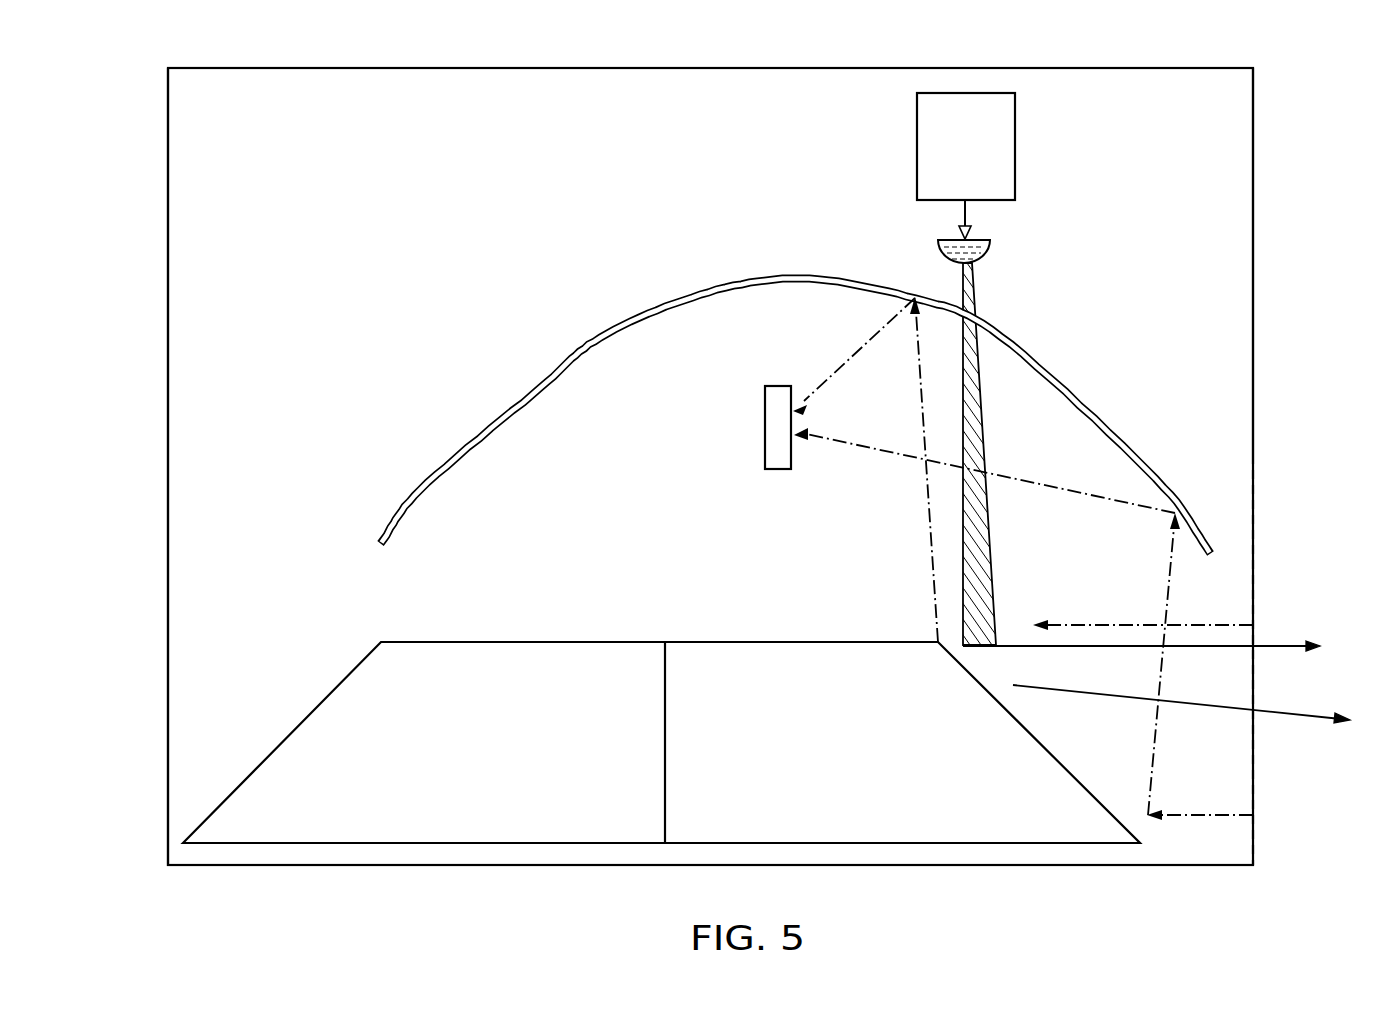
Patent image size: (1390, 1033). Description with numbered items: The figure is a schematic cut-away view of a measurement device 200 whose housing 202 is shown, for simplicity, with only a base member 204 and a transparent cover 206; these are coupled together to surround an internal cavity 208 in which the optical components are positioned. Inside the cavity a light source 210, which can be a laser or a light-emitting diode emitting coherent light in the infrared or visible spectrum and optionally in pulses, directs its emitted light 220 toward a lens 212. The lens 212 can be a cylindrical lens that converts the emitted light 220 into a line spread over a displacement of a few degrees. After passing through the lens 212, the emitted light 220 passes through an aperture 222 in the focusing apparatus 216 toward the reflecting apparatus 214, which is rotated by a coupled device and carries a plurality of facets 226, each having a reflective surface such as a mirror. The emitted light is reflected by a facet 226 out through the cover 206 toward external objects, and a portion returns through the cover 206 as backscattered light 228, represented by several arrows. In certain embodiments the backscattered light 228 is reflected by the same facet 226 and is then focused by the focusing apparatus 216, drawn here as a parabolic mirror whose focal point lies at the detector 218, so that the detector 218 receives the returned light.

The measurement device 200 is at (128, 122).
The housing 202 is at (1328, 422).
The base member 204 is at (1255, 455).
The transparent cover 206 is at (1255, 500).
The internal cavity 208 is at (259, 163).
The light source 210 is at (982, 168).
The lens 212 is at (985, 250).
The reflecting apparatus 214 is at (496, 641).
The focusing apparatus 216 is at (601, 333).
The detector 218 is at (778, 428).
The emitted light 220 is at (964, 211).
The aperture 222 is at (980, 321).
The facet 226 is at (302, 719).
The backscattered light 228 is at (848, 358).